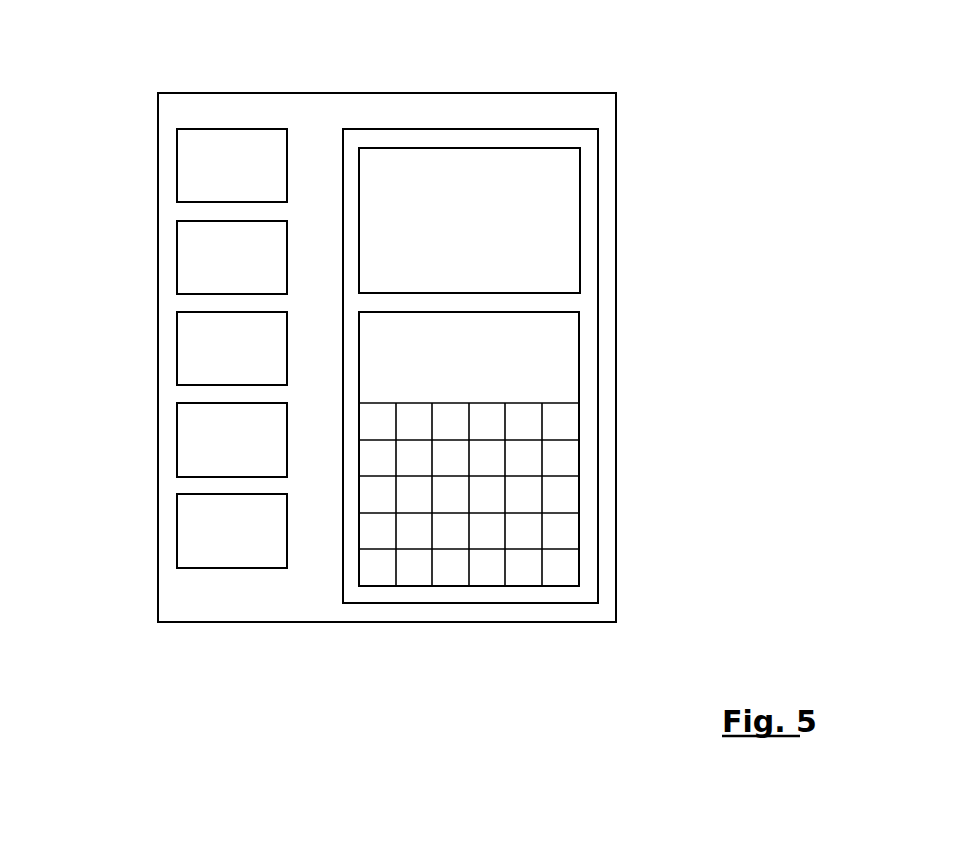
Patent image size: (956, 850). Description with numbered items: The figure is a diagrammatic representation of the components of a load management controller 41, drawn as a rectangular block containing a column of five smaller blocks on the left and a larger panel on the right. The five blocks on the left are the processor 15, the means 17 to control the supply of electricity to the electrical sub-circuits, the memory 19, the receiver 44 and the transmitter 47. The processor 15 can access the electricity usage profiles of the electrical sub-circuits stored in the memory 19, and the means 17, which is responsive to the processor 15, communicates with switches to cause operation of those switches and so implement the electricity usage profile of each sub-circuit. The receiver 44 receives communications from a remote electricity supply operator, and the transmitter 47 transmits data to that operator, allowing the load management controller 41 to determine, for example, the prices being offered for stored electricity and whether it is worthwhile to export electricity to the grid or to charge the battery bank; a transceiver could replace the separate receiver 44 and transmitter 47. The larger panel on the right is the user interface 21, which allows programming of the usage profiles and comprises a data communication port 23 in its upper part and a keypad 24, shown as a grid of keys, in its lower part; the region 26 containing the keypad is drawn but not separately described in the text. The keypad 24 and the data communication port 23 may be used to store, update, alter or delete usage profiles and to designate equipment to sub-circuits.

The load management controller 41 is at (712, 88).
The processor 15 is at (195, 165).
The means to control the supply of electricity 17 is at (195, 257).
The memory 19 is at (195, 348).
The receiver 44 is at (195, 439).
The transmitter 47 is at (195, 530).
The user interface 21 is at (598, 177).
The data communication port 23 is at (560, 252).
The lower display window 26 is at (560, 348).
The keypad 24 is at (560, 475).